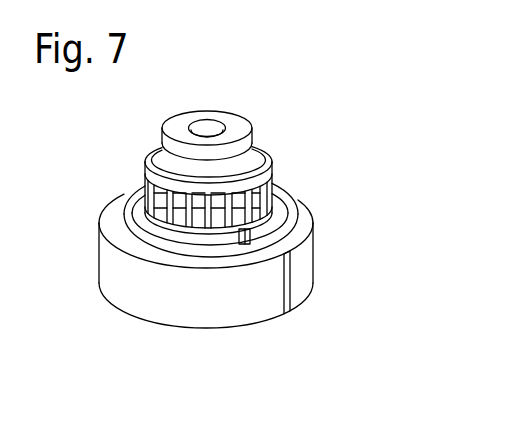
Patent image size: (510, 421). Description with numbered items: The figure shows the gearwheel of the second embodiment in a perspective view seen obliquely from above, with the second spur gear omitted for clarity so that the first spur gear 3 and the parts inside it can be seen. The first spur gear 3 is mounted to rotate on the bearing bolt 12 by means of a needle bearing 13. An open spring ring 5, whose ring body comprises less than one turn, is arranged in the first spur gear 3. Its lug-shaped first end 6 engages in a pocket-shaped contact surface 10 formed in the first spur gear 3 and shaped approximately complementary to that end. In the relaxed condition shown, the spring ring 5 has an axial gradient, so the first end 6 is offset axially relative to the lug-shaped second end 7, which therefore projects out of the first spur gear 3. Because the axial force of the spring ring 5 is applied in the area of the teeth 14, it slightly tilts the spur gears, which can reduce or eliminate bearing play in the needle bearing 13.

The first spur gear 3 is at (300, 252).
The spring ring 5 is at (280, 210).
The first end of the spring ring 6 is at (276, 226).
The second end of the spring ring 7 is at (232, 240).
The contact surface 10 is at (253, 222).
The bearing bolt 12 is at (232, 162).
The needle bearing 13 is at (281, 172).
The teeth 14 is at (292, 281).